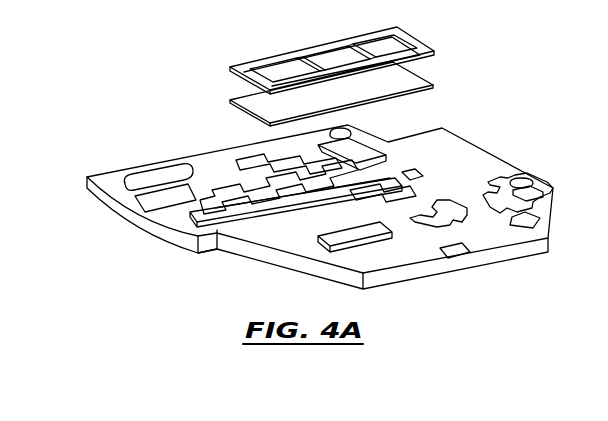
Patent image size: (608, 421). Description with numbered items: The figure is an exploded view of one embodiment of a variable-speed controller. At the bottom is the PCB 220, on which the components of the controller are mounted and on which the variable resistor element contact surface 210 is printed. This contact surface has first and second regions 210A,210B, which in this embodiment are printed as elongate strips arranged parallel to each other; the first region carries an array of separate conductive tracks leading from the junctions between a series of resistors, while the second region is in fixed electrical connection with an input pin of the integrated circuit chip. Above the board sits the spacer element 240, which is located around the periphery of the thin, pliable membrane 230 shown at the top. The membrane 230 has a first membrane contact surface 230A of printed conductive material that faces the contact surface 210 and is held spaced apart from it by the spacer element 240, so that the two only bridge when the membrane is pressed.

The variable resistor element contact surface 210 is at (323, 216).
The first and second regions of the variable resistor element contact surface 210A,210B is at (337, 205).
The PCB 220 is at (178, 240).
The membrane 230 is at (420, 42).
The first membrane contact surface 230A is at (262, 80).
The spacer element 240 is at (413, 95).